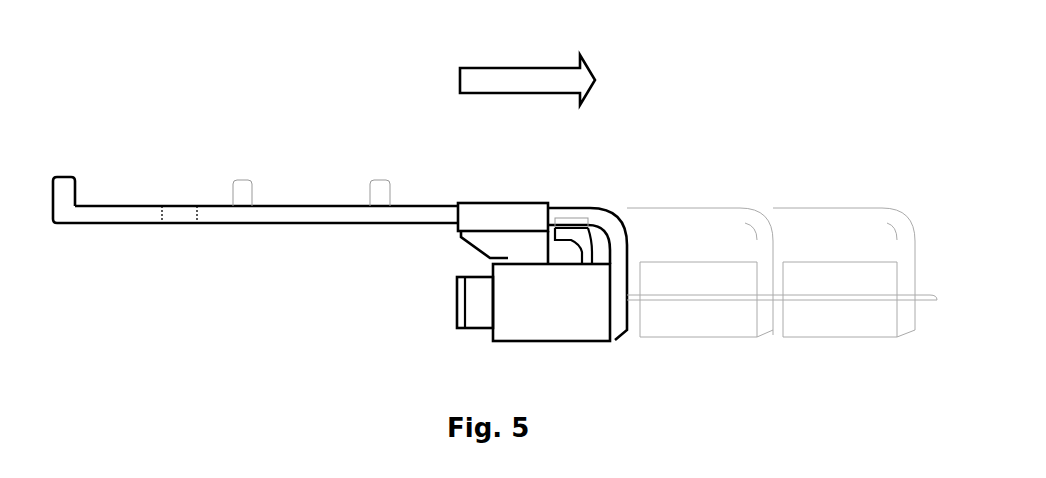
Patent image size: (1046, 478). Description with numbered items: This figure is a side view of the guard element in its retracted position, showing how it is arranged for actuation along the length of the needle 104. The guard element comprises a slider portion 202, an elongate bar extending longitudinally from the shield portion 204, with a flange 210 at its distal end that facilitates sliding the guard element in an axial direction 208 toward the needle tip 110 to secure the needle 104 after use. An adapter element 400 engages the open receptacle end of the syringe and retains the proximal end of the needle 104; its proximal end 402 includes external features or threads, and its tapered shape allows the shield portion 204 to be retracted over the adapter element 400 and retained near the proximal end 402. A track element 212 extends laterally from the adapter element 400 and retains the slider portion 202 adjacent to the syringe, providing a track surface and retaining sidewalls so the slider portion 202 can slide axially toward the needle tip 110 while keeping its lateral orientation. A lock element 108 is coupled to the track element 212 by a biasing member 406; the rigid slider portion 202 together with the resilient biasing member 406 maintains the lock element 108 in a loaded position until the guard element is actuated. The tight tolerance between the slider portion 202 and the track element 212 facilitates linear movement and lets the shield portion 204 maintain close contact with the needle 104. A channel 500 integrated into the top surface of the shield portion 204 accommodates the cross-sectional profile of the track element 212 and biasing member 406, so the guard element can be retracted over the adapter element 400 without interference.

The needle 104 is at (777, 300).
The lock element 108 is at (566, 223).
The needle tip 110 is at (941, 299).
The slider portion 202 is at (290, 173).
The shield portion 204 is at (557, 329).
The axial direction 208 is at (520, 78).
The flange 210 is at (67, 188).
The track element 212 is at (503, 196).
The adapter element 400 is at (483, 322).
The proximal end 402 is at (460, 303).
The biasing member 406 is at (603, 223).
The channel 500 is at (490, 265).